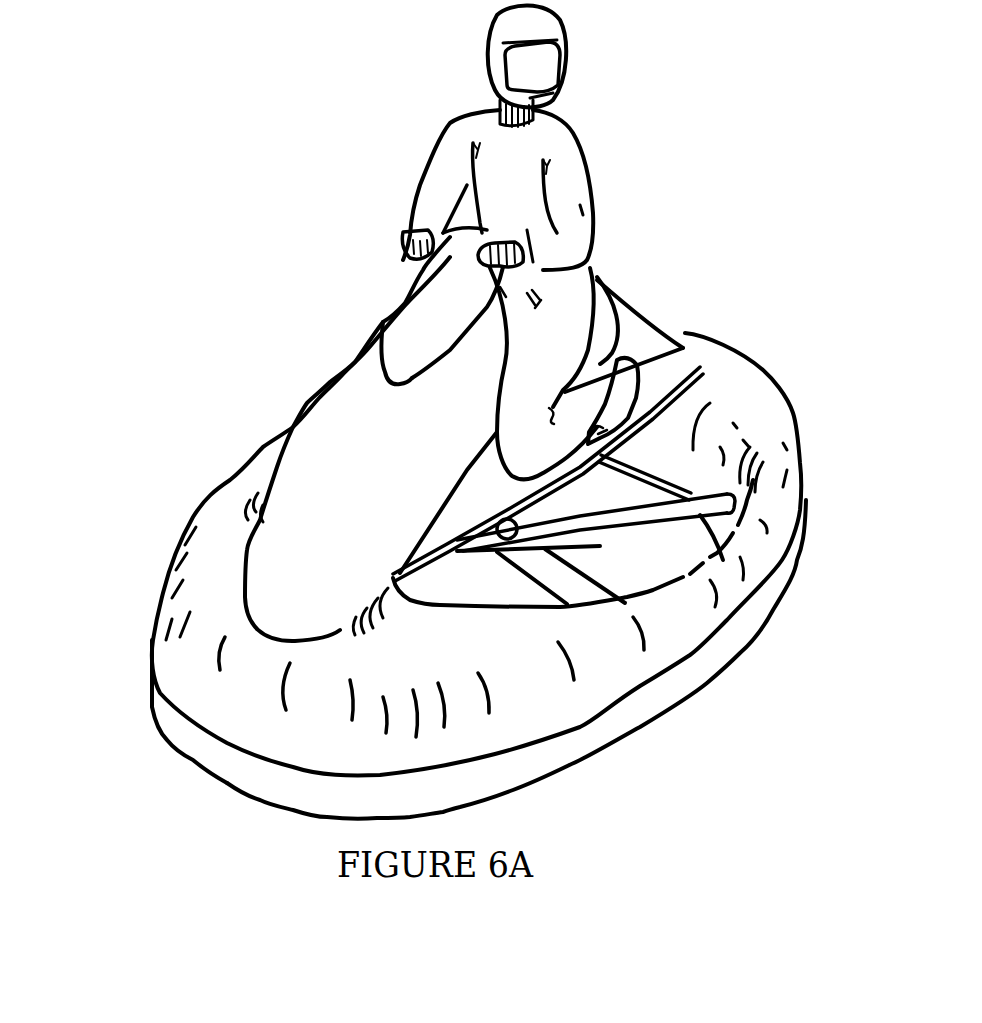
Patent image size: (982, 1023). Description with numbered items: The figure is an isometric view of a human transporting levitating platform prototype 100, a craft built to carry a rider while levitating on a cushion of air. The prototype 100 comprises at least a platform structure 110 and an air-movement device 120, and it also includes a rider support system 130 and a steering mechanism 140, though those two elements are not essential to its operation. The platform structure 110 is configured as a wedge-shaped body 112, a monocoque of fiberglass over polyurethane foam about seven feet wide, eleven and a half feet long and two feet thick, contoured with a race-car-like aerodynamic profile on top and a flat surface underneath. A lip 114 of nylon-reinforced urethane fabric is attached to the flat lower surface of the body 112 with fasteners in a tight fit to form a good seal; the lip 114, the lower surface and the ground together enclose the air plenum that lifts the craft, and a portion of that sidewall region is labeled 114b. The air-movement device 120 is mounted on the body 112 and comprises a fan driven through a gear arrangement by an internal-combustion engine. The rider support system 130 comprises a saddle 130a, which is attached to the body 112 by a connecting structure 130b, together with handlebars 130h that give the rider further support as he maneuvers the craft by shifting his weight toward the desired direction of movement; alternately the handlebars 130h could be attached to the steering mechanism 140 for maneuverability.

The human transporting levitating platform prototype 100 is at (790, 371).
The platform structure 110 is at (801, 470).
The wedge-shaped body 112 is at (763, 543).
The lip 114 is at (760, 606).
The tube side wall 114b is at (173, 755).
The air-movement device 120 is at (677, 627).
The rider support system 130 is at (647, 293).
The saddle 130a is at (605, 278).
The connecting structure 130b is at (653, 323).
The handlebars 130h is at (403, 240).
The steering mechanism 140 is at (417, 327).